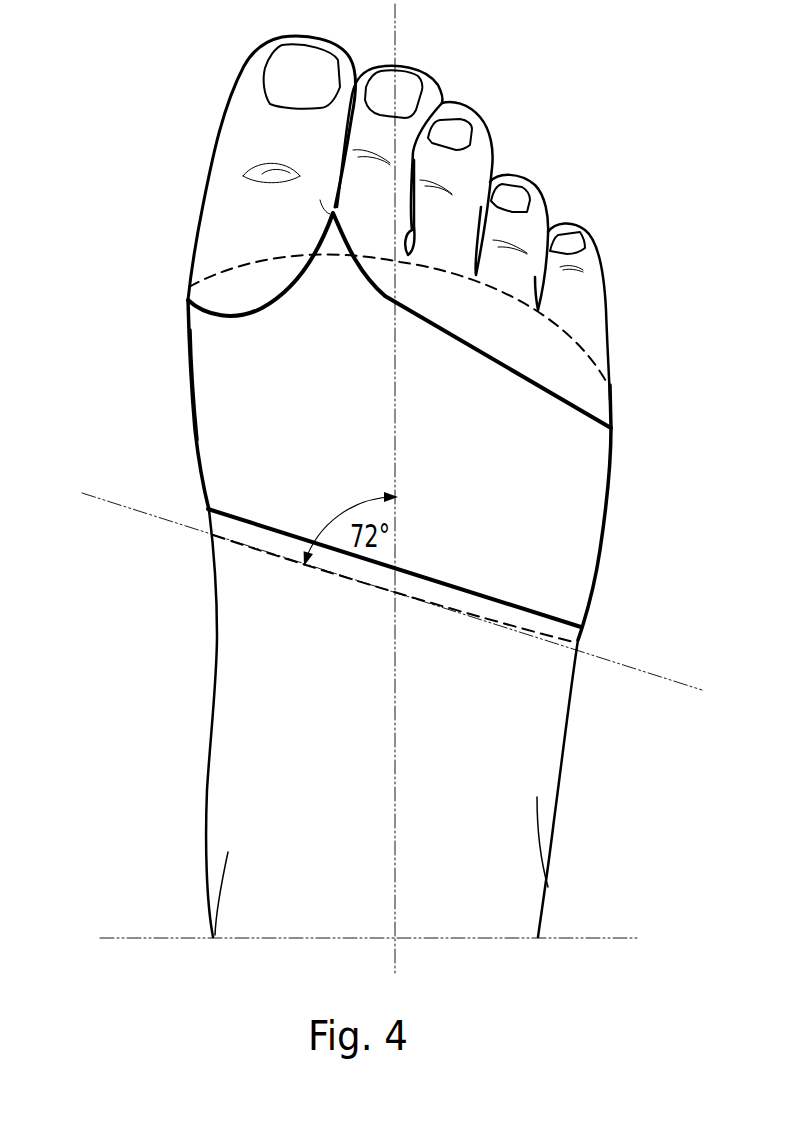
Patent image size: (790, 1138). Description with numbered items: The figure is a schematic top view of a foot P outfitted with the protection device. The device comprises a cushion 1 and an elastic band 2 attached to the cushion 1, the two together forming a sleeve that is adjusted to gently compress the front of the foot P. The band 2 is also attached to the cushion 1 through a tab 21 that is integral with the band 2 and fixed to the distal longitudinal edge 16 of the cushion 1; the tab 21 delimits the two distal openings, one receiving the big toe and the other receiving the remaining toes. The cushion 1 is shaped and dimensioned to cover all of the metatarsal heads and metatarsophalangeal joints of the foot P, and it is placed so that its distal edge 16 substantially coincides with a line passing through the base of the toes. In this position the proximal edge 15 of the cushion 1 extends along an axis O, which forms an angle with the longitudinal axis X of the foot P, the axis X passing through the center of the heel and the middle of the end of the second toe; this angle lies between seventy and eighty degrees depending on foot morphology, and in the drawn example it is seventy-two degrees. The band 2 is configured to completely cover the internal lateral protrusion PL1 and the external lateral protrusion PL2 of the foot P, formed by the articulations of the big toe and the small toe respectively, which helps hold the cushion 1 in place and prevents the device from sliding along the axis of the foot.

The cushion 1 is at (247, 548).
The elastic band 2 is at (213, 403).
The proximal edge 15 is at (478, 620).
The distal longitudinal edge 16 is at (575, 345).
The tab 21 is at (332, 232).
The foot P is at (146, 132).
The internal lateral protrusion PL1 is at (176, 352).
The external lateral protrusion PL2 is at (627, 492).
The longitudinal axis X is at (399, 42).
The axis O is at (98, 500).